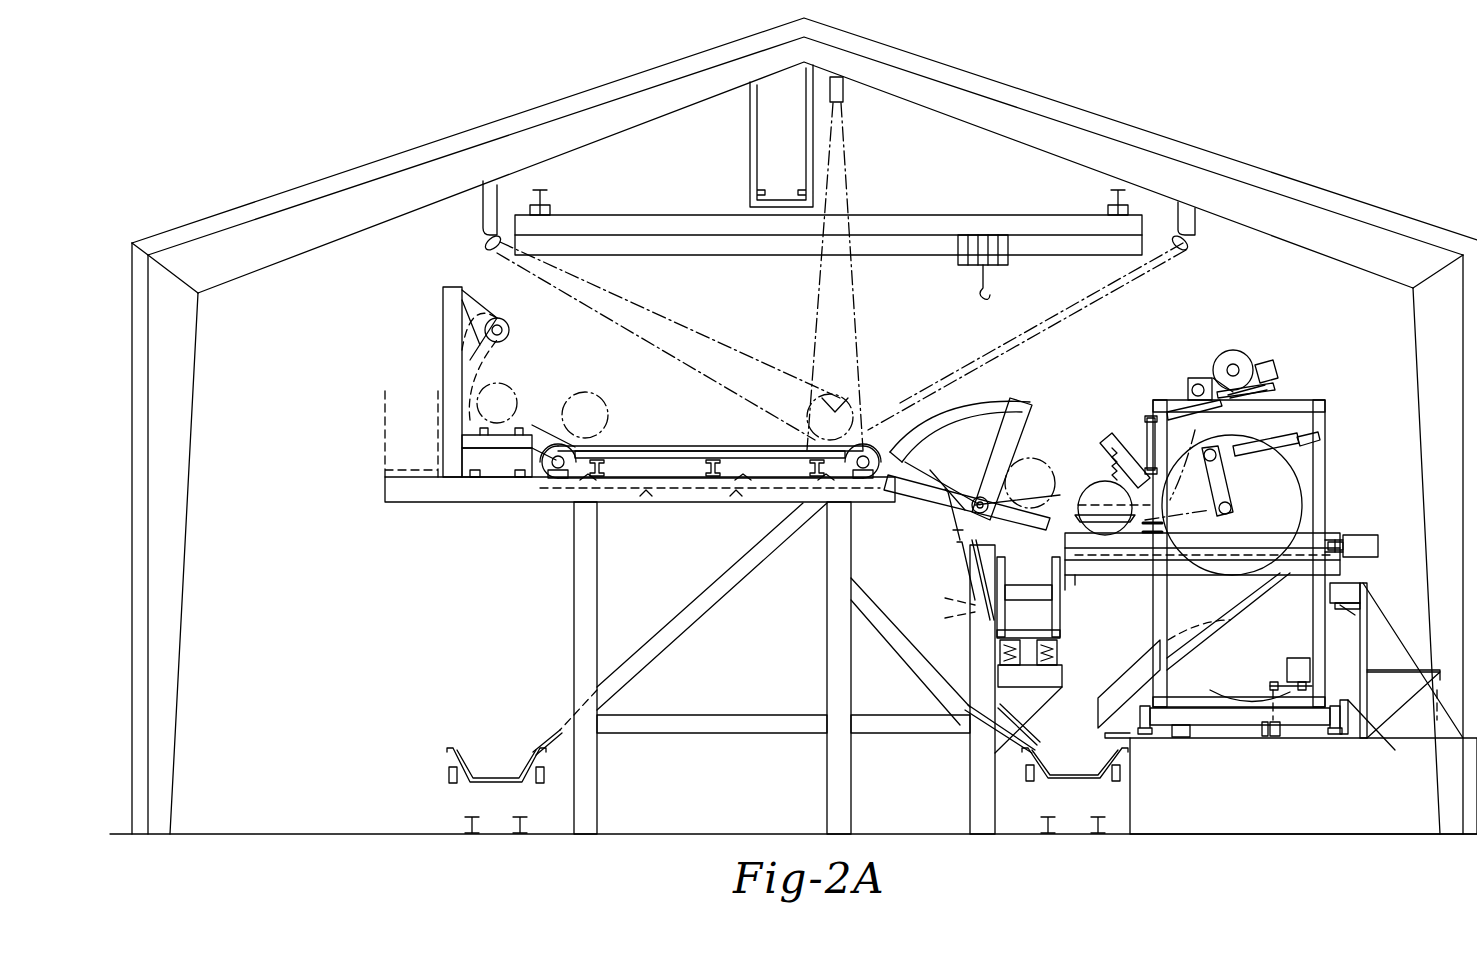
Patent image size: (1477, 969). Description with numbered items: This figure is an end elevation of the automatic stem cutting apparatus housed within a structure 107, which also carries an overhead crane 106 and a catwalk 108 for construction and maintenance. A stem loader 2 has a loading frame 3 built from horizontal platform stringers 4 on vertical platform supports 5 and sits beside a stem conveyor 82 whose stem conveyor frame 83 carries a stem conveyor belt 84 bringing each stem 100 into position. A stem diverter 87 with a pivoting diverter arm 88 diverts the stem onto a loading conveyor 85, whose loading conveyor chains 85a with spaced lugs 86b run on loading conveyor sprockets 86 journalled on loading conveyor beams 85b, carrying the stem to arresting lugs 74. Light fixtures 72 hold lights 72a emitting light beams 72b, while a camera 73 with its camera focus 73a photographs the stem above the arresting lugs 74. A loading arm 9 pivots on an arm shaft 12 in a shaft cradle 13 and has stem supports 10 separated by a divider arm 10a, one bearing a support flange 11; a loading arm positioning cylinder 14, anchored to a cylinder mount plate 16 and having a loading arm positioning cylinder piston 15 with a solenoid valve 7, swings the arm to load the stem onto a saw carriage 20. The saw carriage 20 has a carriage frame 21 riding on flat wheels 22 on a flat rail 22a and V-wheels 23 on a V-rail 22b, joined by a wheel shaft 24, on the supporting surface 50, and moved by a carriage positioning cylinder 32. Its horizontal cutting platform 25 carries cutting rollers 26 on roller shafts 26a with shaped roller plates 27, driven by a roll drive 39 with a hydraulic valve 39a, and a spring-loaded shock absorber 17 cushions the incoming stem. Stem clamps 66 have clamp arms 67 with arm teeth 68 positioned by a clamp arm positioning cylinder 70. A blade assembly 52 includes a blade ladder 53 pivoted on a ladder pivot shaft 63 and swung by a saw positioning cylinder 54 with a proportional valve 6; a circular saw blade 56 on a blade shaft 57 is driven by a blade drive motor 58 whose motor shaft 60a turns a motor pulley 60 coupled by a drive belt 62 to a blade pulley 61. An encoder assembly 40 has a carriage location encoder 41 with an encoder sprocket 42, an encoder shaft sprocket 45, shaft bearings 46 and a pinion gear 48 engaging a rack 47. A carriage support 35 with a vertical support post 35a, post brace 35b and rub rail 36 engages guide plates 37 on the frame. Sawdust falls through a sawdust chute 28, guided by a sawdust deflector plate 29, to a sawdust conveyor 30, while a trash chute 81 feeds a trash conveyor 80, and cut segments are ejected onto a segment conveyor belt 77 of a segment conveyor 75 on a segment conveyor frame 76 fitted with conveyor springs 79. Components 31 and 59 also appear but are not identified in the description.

The stem loader 2 is at (555, 562).
The loading frame 3 is at (572, 628).
The horizontal platform stringers 4 is at (390, 502).
The vertical platform supports 5 is at (572, 650).
The proportional valve 6 is at (1277, 433).
The solenoid valve 7 is at (962, 555).
The loading arm 9 is at (1008, 385).
The stem supports 10 is at (982, 460).
The divider arm 10a is at (1010, 410).
The support flange 11 is at (955, 395).
The arm shaft 12 is at (975, 495).
The shaft cradle 13 is at (946, 473).
The loading arm positioning cylinder 14 is at (946, 593).
The loading arm positioning cylinder piston 15 is at (950, 535).
The cylinder mount plate 16 is at (1343, 398).
The spring-loaded shock absorber 17 is at (1163, 515).
The saw carriage 20 is at (1330, 462).
The carriage frame 21 is at (1330, 425).
The flat wheels 22 is at (1105, 705).
The flat rail 22a is at (1148, 735).
The V-rail 22b is at (1335, 740).
The V-wheels 23 is at (1345, 738).
The wheel shaft 24 is at (1230, 730).
The horizontal cutting platform 25 is at (1222, 580).
The cutting rollers 26 is at (1095, 490).
The roller shaft 26a is at (1235, 598).
The shaped roller plates 27 is at (1080, 578).
The sawdust chute 28 is at (862, 540).
The sawdust deflector plate 29 is at (968, 732).
The sawdust conveyor 30 is at (1052, 772).
The collection trough 31 is at (537, 785).
The carriage positioning cylinder 32 is at (1182, 738).
The carriage support 35 is at (1415, 650).
The vertical support post 35a is at (1398, 735).
The post brace 35b is at (1438, 730).
The rub rail 36 is at (1362, 568).
The guide plates 37 is at (1330, 590).
The roll drive 39 is at (1355, 530).
The hydraulic valve 39a is at (1378, 535).
The encoder assembly 40 is at (1268, 678).
The carriage location encoder 41 is at (1300, 660).
The encoder sprocket 42 is at (1360, 610).
The encoder shaft sprocket 45 is at (1270, 680).
The shaft bearings 46 is at (1240, 695).
The rack 47 is at (1275, 740).
The pinion gear 48 is at (1275, 738).
The supporting surface 50 is at (1380, 740).
The blade assembly 52 is at (1290, 400).
The blade ladder 53 is at (1195, 395).
The saw positioning cylinder 54 is at (1270, 448).
The circular saw blade 56 is at (1276, 531).
The blade shaft 57 is at (1168, 532).
The blade drive motor 58 is at (1248, 365).
The slide plate 59 is at (1275, 383).
The motor pulley 60 is at (1236, 350).
The motor shaft 60a is at (1245, 370).
The blade pulley 61 is at (1200, 460).
The drive belt 62 is at (1220, 385).
The ladder pivot shaft 63 is at (1192, 378).
The stem clamps 66 is at (1103, 443).
The clamp arm 67 is at (1150, 495).
The arm teeth 68 is at (1108, 465).
The clamp arm positioning cylinder 70 is at (1148, 430).
The light fixtures 72 is at (480, 212).
The lights 72a is at (495, 250).
The light beams 72b is at (705, 335).
The cameras 73 is at (845, 95).
The camera focus 73a is at (862, 300).
The arresting lugs 74 is at (820, 420).
The segment conveyor 75 is at (1035, 692).
The segment conveyor frame 76 is at (990, 622).
The segment conveyor belt 77 is at (1028, 620).
The conveyor springs 79 is at (1060, 665).
The trash conveyor 80 is at (497, 765).
The trash chute 81 is at (700, 600).
The stem conveyor 82 is at (500, 480).
The stem conveyor frame 83 is at (458, 438).
The stem conveyor belt 84 is at (522, 408).
The loading conveyor 85 is at (688, 505).
The loading conveyor chains 85a is at (645, 440).
The loading conveyor beams 85b is at (658, 470).
The loading conveyor sprockets 86 is at (552, 490).
The spaced lugs 86b is at (740, 443).
The stem diverters 87 is at (470, 290).
The diverter arm 88 is at (510, 345).
The stem 100 is at (525, 388).
The overhead crane 106 is at (795, 258).
The structure 107 is at (420, 148).
The catwalk 108 is at (778, 192).